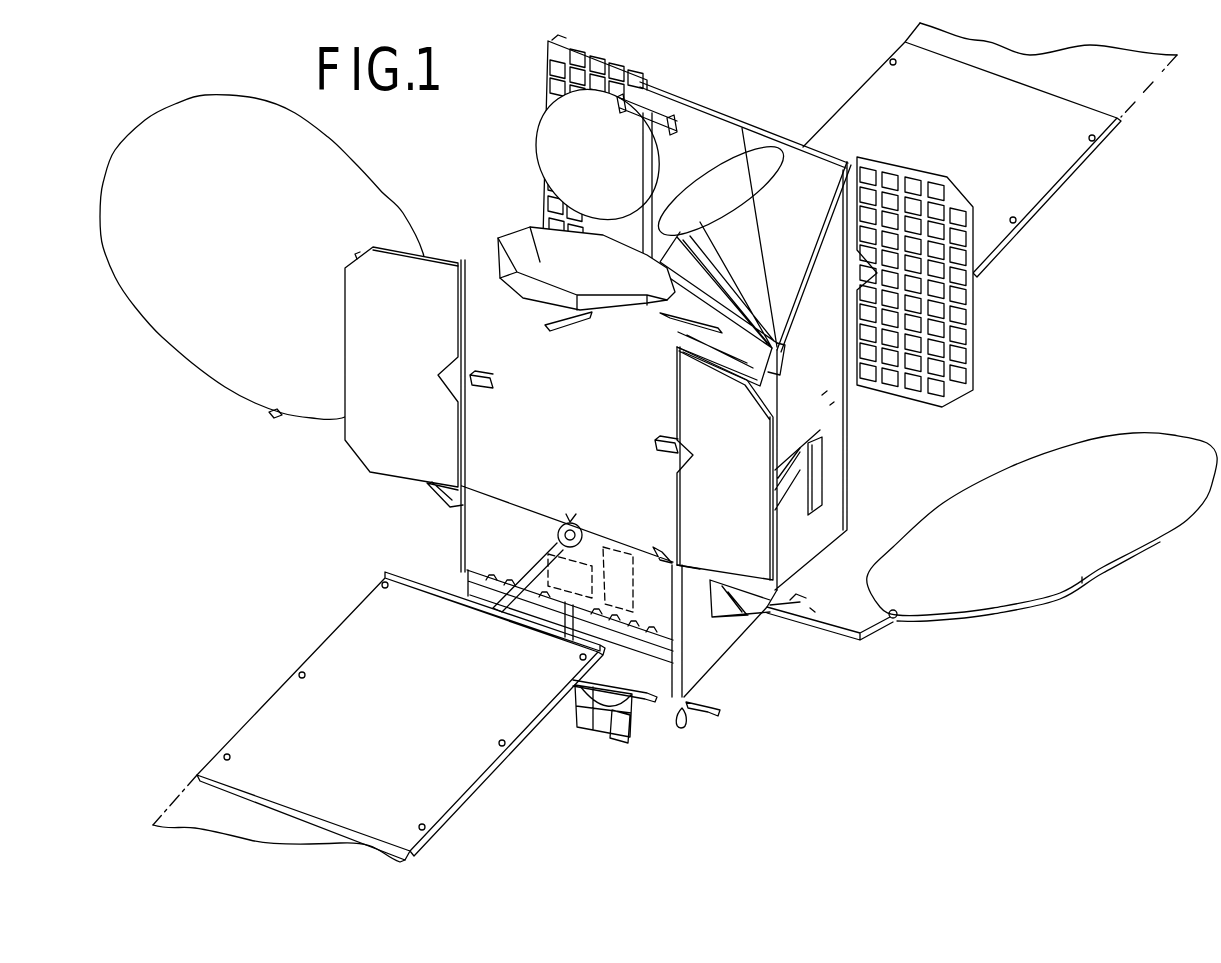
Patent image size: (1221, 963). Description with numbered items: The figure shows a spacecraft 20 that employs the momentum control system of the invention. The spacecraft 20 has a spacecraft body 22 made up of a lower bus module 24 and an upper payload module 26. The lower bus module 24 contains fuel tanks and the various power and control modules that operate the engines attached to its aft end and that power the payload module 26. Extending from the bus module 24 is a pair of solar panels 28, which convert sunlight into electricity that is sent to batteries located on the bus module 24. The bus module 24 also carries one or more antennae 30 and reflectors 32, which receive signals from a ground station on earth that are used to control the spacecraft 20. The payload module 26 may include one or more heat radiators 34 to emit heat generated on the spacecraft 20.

The spacecraft 20 is at (476, 177).
The spacecraft body 22 is at (582, 412).
The lower bus module 24 is at (713, 645).
The upper payload module 26 is at (827, 382).
The solar panels 28 is at (982, 132).
The antennae 30 is at (1046, 539).
The reflectors 32 is at (611, 157).
The heat radiators 34 is at (414, 351).